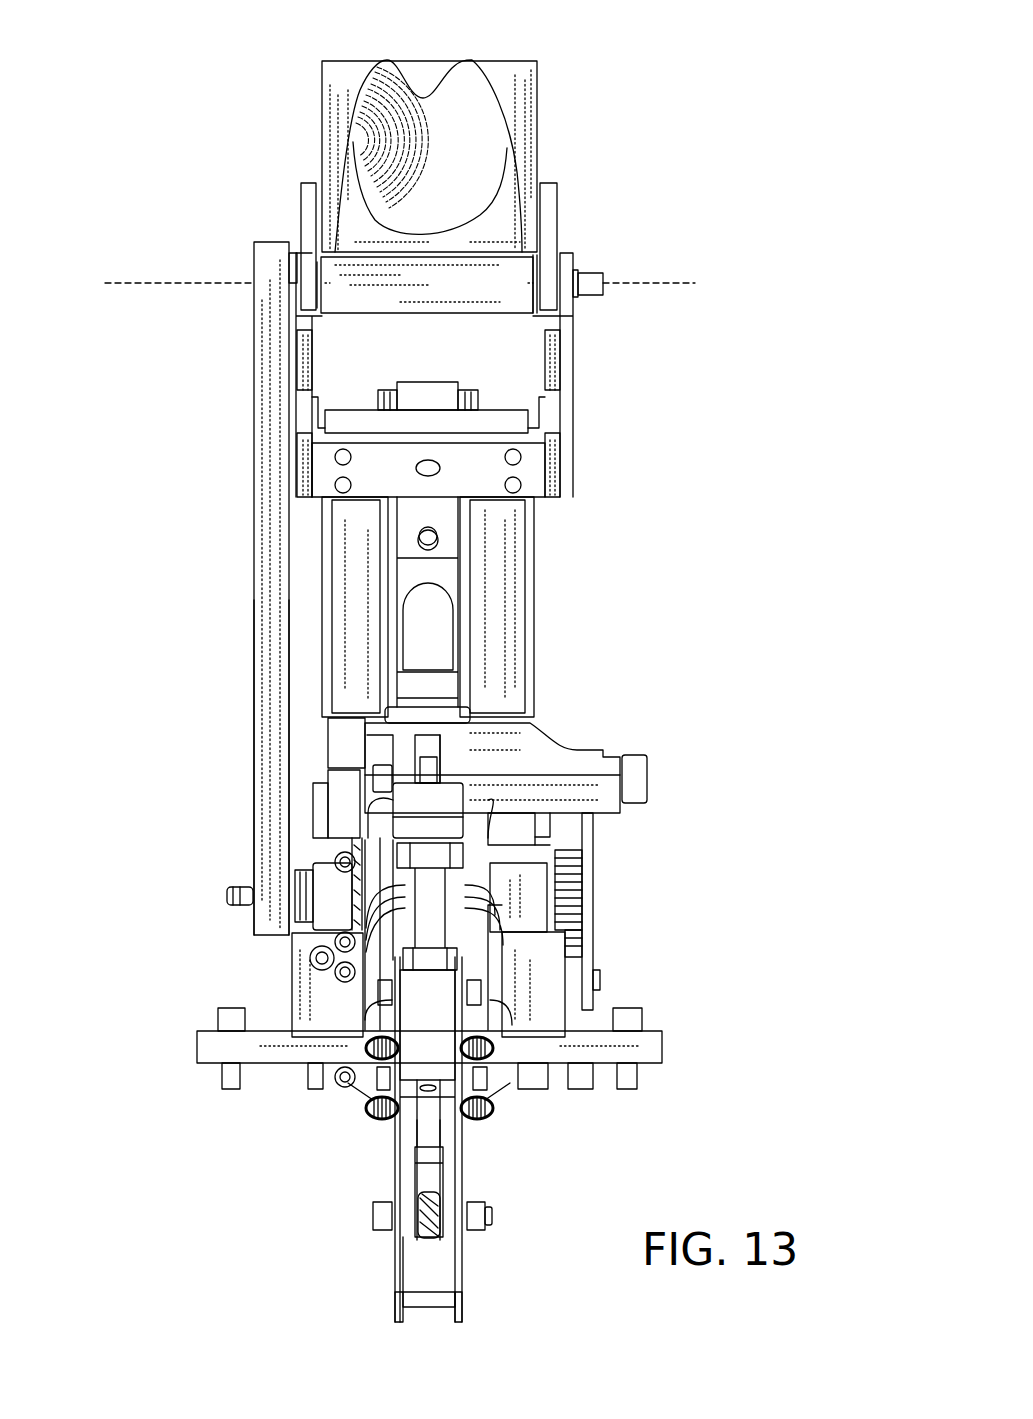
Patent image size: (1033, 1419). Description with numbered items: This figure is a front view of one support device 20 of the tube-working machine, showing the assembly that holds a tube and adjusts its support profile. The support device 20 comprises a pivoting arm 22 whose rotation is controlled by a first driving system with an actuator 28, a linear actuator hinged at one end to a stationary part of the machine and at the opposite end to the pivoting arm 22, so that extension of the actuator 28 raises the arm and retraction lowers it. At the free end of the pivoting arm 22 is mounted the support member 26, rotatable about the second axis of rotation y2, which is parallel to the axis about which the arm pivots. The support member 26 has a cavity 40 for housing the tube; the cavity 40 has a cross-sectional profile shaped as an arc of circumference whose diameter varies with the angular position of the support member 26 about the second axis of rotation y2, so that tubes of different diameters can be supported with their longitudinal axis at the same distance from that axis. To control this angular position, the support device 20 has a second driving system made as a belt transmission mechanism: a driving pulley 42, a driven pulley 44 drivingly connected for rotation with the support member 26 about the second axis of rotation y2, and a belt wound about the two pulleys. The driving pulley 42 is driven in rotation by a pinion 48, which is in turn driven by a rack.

The support device 20 is at (547, 552).
The pivoting arm 22 is at (537, 668).
The support member 26 is at (538, 122).
The actuator 28 is at (500, 957).
The cavity 40 is at (407, 78).
The driving pulley 42 is at (267, 943).
The driven pulley 44 is at (248, 252).
The pinion 48 is at (255, 640).
The second axis of rotation y2 is at (663, 283).